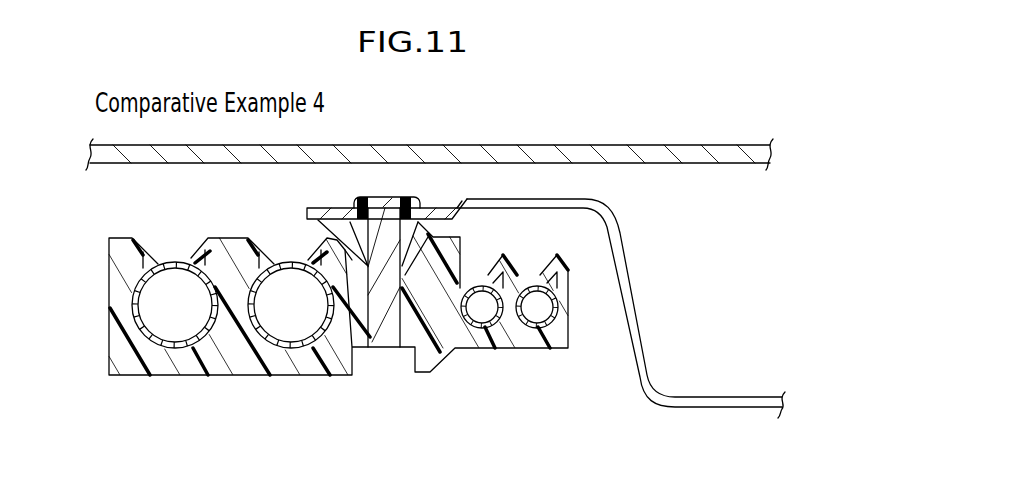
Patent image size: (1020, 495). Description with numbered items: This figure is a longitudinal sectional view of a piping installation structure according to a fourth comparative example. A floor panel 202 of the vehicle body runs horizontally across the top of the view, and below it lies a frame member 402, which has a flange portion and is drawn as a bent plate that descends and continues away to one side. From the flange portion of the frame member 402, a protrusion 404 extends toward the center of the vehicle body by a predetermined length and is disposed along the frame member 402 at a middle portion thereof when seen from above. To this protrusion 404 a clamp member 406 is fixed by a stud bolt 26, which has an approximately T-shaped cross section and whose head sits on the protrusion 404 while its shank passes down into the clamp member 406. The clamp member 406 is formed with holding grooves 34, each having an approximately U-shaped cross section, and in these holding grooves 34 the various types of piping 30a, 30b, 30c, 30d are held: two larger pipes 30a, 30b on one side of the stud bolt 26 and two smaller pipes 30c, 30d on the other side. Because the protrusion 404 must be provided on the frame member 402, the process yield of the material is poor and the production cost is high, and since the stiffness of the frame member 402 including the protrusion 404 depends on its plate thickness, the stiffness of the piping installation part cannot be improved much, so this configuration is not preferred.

The floor panel 202 is at (642, 145).
The frame member 402 is at (637, 312).
The protrusion 404 is at (433, 206).
The stud bolt 26 is at (384, 320).
The clamp member 406 is at (108, 283).
The piping 30a is at (169, 344).
The piping 30b is at (290, 348).
The piping 30c is at (478, 325).
The piping 30d is at (533, 327).
The holding groove 34 is at (188, 326).